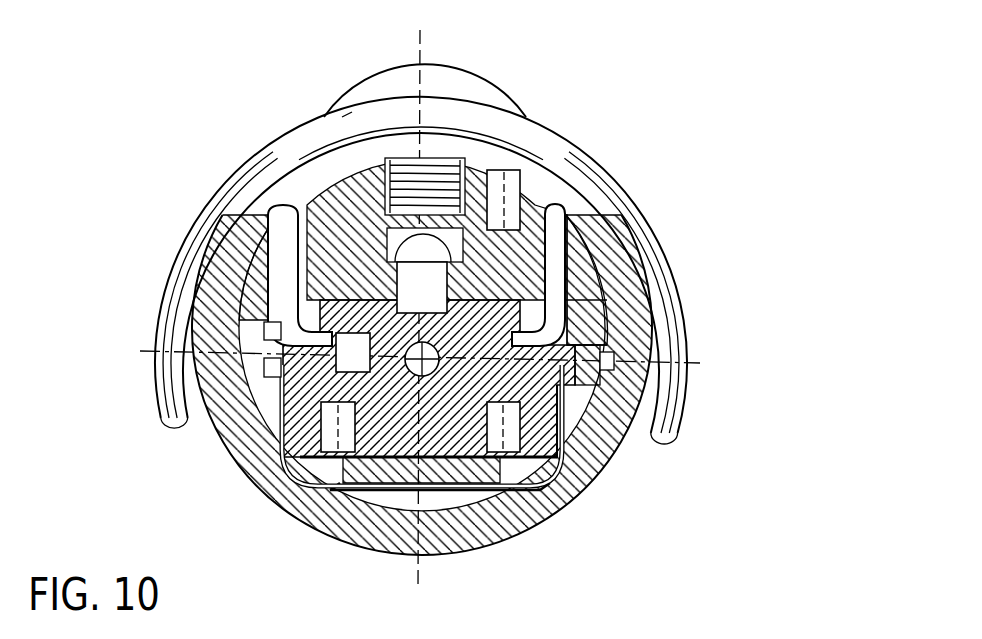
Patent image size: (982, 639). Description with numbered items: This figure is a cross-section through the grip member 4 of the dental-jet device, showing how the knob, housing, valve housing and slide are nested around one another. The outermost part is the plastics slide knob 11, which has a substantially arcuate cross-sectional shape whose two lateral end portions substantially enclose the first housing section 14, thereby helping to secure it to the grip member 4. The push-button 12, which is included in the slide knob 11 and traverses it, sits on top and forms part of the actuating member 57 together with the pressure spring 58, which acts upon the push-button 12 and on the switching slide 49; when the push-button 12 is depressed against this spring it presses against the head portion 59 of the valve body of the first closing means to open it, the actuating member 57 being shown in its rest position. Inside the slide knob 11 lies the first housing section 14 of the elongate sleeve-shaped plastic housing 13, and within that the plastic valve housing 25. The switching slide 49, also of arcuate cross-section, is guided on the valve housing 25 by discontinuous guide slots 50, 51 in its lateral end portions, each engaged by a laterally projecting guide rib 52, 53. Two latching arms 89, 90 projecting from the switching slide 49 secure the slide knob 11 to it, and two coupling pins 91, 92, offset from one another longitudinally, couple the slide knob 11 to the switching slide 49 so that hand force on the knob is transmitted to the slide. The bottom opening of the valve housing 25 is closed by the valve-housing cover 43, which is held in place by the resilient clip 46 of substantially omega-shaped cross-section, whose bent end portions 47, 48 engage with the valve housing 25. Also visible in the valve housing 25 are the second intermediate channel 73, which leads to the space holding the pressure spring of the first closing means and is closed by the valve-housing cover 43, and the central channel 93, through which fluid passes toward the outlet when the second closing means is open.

The grip member 4 is at (752, 222).
The slide knob 11 is at (512, 133).
The push-button 12 is at (404, 80).
The plastic housing 13 is at (641, 451).
The first housing section 14 is at (265, 489).
The valve housing 25 is at (508, 466).
The valve-housing cover 43 is at (400, 494).
The clip 46 is at (330, 468).
The bent end portion 47 is at (590, 343).
The bent end portion 48 is at (268, 340).
The switching slide 49 is at (588, 290).
The guide slot 50 is at (602, 298).
The guide slot 51 is at (262, 245).
The guide rib 52 is at (625, 362).
The guide rib 53 is at (262, 362).
The actuating member 57 is at (469, 60).
The pressure spring 58 is at (395, 165).
The head portion 59 is at (553, 235).
The second intermediate channel 73 is at (290, 428).
The latching arm 89 is at (590, 245).
The latching arm 90 is at (290, 233).
The coupling pin 91 is at (517, 185).
The coupling pin 92 is at (335, 168).
The central channel 93 is at (560, 458).